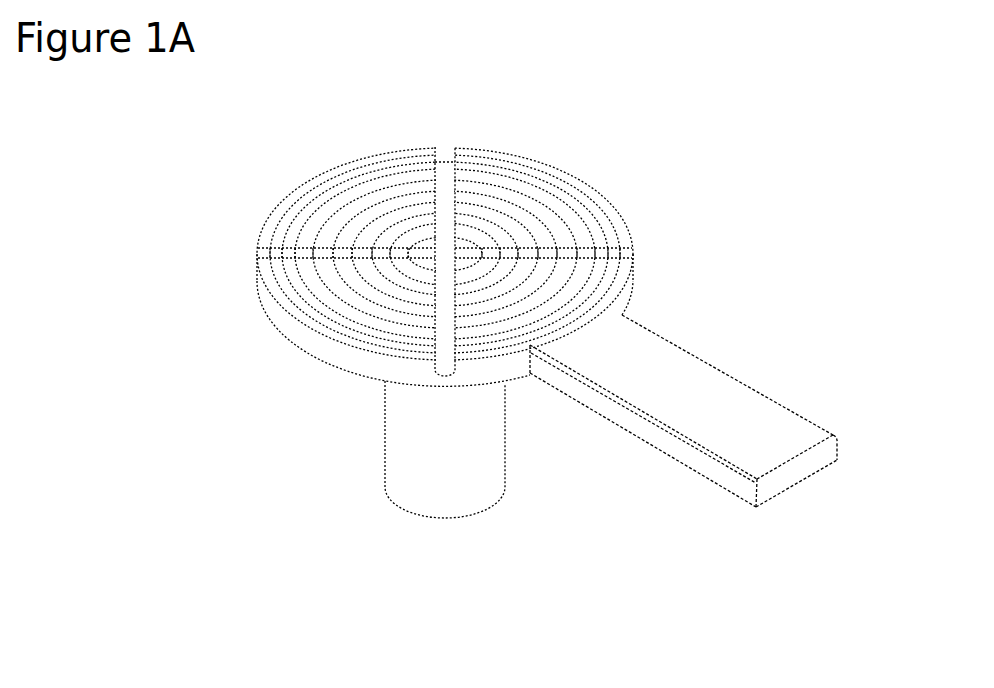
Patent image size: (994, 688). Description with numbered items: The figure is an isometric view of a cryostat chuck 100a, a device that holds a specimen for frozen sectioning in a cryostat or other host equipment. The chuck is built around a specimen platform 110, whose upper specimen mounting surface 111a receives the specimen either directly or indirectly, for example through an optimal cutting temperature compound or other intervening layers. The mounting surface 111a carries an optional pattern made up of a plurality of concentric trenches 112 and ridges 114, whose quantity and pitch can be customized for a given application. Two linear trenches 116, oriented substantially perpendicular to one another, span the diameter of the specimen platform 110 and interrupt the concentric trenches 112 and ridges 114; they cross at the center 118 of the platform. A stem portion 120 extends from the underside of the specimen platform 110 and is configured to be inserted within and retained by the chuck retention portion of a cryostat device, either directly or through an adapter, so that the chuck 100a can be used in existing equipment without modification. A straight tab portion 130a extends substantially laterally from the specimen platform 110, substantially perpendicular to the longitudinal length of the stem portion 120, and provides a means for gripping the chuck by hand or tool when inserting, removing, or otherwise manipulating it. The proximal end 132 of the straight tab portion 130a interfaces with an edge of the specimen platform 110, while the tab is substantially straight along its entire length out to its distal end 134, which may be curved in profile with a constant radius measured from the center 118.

The cryostat chuck 100a is at (823, 98).
The specimen platform 110 is at (332, 358).
The specimen mounting surface 111a is at (584, 232).
The concentric trenches 112 is at (327, 267).
The ridges 114 is at (307, 238).
The linear trenches 116 is at (446, 169).
The center 118 is at (447, 254).
The stem portion 120 is at (412, 448).
The straight tab portion 130a is at (752, 422).
The proximal end 132 is at (532, 367).
The distal end 134 is at (788, 483).